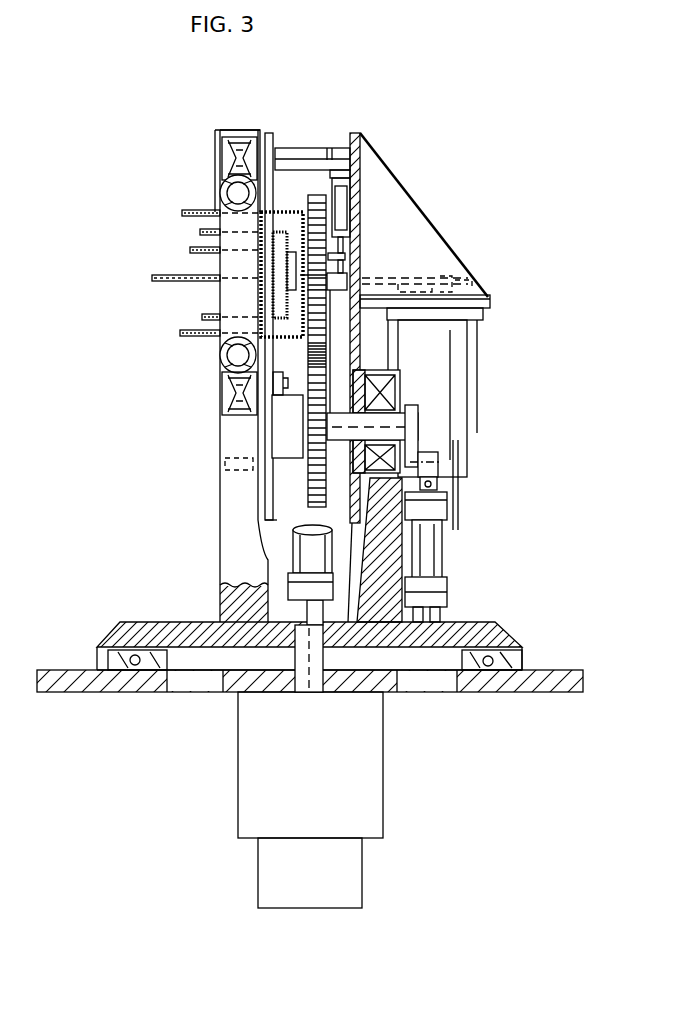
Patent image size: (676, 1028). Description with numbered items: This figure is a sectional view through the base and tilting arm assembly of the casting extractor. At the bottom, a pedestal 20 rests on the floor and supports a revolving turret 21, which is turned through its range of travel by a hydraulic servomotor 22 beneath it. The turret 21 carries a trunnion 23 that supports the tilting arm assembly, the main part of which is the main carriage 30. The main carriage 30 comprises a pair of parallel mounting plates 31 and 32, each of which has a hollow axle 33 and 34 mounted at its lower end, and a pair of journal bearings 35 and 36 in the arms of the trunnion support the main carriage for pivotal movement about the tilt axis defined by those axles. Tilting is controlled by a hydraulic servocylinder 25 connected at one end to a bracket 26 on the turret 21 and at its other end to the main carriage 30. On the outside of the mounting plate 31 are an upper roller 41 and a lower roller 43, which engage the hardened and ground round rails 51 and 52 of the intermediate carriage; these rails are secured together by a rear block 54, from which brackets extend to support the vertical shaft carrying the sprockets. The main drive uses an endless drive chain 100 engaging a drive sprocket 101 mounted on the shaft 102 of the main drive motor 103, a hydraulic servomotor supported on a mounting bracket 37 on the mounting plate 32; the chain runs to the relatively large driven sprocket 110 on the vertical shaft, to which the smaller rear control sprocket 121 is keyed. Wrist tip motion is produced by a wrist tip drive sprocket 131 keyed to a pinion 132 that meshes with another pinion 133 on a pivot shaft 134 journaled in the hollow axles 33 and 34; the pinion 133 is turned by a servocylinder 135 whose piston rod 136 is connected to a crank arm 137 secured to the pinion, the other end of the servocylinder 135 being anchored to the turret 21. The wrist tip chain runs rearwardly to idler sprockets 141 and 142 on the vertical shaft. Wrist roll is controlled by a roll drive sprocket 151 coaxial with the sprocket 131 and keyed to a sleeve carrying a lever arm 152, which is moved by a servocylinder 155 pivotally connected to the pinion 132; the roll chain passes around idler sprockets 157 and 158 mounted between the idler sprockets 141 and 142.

The pedestal 20 is at (565, 692).
The turret 21 is at (140, 625).
The hydraulic servomotor 22 is at (372, 797).
The trunnion 23 is at (238, 528).
The hydraulic servocylinder 25 is at (305, 555).
The bracket 26 is at (300, 620).
The main carriage 30 is at (452, 134).
The mounting plate 31 is at (270, 132).
The mounting plate 32 is at (356, 135).
The hollow axle 33 is at (286, 438).
The hollow axle 34 is at (400, 428).
The journal bearing 35 is at (380, 375).
The journal bearing 36 is at (232, 473).
The mounting bracket 37 is at (490, 302).
The upper roller 41 is at (225, 152).
The lower roller 43 is at (222, 393).
The round rail 51 is at (225, 190).
The round rail 52 is at (222, 352).
The rear block 54 is at (240, 130).
The endless drive chain 100 is at (405, 275).
The drive sprocket 101 is at (460, 280).
The shaft 102 is at (485, 282).
The main drive motor 103 is at (478, 395).
The driven sprocket 110 is at (160, 278).
The rear control sprocket 121 is at (200, 250).
The wrist tip drive sprocket 131 is at (300, 296).
The pinion 132 is at (317, 197).
The pinion 133 is at (313, 487).
The pivot shaft 134 is at (410, 425).
The servocylinder 135 is at (435, 548).
The piston rod 136 is at (440, 486).
The crank arm 137 is at (425, 465).
The idler sprocket 141 is at (205, 213).
The idler sprocket 142 is at (205, 334).
The roll drive sprocket 151 is at (278, 258).
The lever arm 152 is at (350, 266).
The servocylinder 155 is at (345, 200).
The idler sprocket 157 is at (210, 232).
The idler sprocket 158 is at (205, 320).